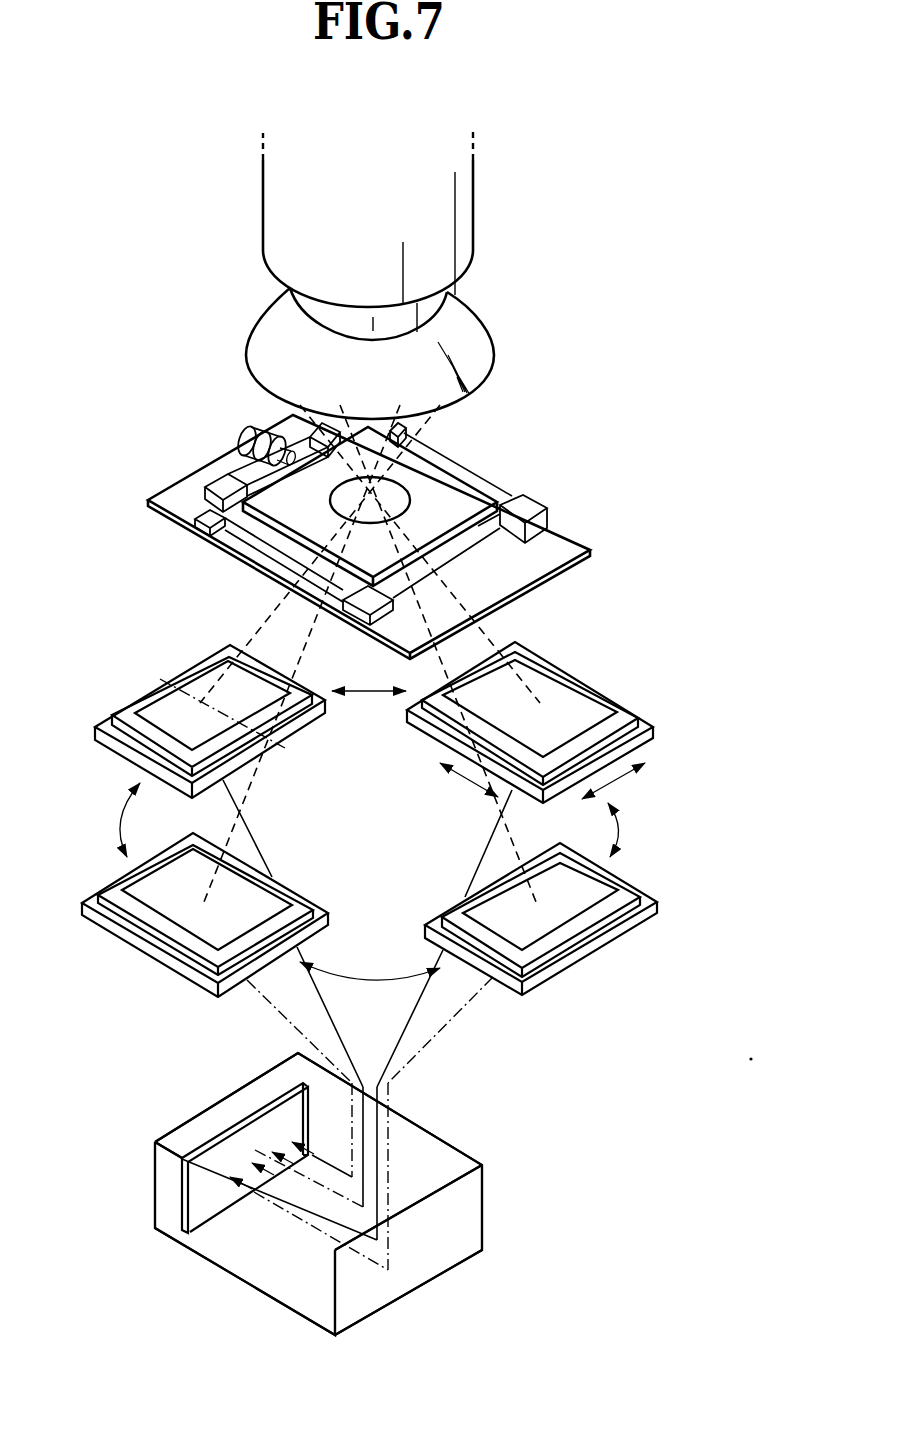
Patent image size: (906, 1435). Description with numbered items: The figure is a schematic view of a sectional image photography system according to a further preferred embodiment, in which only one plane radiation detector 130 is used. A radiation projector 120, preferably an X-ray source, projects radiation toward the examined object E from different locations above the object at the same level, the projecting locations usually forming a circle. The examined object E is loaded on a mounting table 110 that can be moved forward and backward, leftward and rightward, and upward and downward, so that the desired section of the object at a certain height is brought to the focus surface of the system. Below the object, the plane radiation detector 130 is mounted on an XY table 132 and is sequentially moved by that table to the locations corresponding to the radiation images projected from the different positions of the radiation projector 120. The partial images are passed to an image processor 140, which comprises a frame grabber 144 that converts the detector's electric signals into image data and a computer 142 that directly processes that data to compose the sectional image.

The radiation projector 120 is at (455, 208).
The examined object E is at (450, 493).
The mounting table 110 is at (545, 556).
The plane radiation detector 130 is at (590, 692).
The XY table 132 is at (648, 740).
The image processor 140 is at (187, 1021).
The computer 142 is at (158, 1212).
The frame grabber 144 is at (235, 1130).